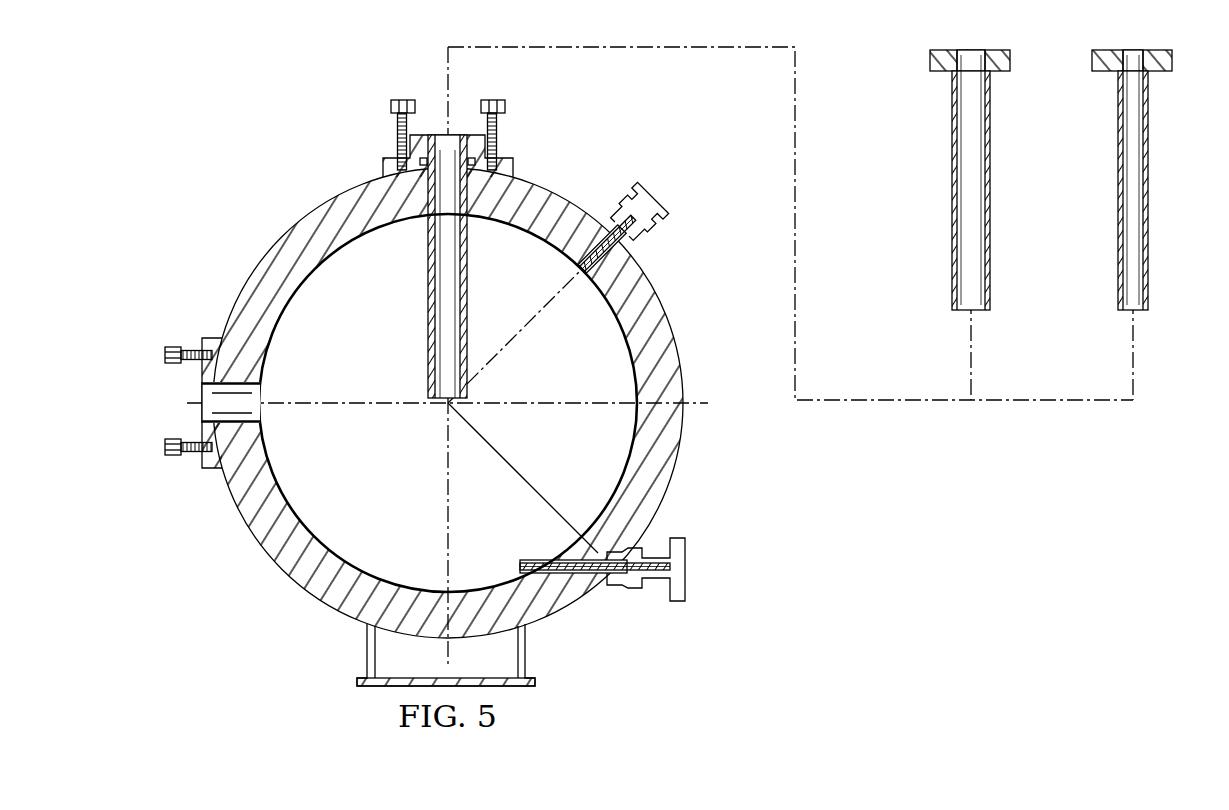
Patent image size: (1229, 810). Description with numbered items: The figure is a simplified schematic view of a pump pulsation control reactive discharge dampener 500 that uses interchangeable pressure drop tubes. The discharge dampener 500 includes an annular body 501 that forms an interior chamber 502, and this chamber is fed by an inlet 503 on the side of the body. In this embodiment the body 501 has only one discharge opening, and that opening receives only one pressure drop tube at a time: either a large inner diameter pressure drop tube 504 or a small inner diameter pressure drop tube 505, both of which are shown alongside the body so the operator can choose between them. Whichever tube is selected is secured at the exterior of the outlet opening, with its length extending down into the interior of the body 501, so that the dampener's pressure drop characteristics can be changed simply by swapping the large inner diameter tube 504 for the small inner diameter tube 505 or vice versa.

The discharge dampener 500 is at (260, 112).
The annular body 501 is at (248, 272).
The interior chamber 502 is at (395, 493).
The inlet 503 is at (212, 392).
The large inner diameter pressure drop tube 504 is at (990, 180).
The small inner diameter pressure drop tube 505 is at (1150, 180).